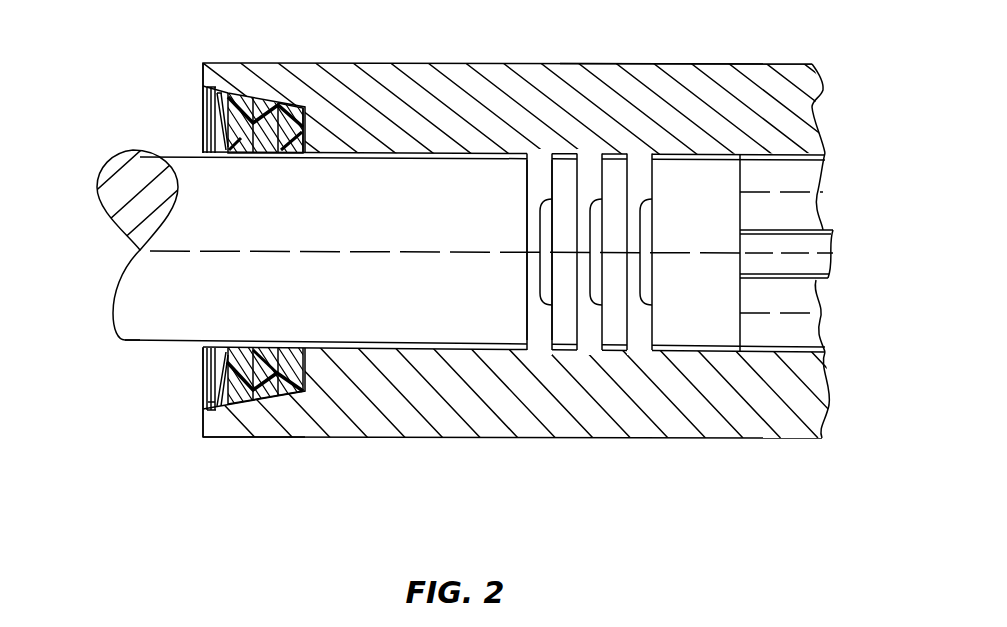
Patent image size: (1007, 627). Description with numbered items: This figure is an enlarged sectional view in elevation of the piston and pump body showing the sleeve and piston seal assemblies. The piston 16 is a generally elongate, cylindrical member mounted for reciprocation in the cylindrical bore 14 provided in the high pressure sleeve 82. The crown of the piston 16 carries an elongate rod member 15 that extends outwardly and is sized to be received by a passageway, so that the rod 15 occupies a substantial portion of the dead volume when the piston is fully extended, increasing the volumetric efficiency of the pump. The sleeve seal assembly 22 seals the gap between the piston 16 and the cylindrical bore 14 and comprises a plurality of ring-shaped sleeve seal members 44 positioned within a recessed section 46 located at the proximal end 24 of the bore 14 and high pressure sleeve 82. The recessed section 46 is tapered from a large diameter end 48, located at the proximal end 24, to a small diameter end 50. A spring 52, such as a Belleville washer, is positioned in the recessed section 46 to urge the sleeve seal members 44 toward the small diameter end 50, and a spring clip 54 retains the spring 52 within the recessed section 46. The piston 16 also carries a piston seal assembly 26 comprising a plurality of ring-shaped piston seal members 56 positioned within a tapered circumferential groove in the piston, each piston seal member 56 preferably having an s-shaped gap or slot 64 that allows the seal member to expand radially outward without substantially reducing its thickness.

The cylindrical bore 14 is at (787, 352).
The elongate rod member 15 is at (786, 278).
The piston 16 is at (108, 275).
The sleeve seal assembly 22 is at (253, 415).
The proximal end 24 is at (203, 418).
The piston seal assembly 26 is at (505, 283).
The ring-shaped sleeve seal members 44 is at (239, 122).
The recessed section 46 is at (274, 100).
The large diameter end 48 is at (203, 78).
The small diameter end 50 is at (305, 112).
The spring 52 is at (205, 125).
The spring clip 54 is at (203, 382).
The ring-shaped piston seal members 56 is at (542, 351).
The s-shaped gap or slot 64 is at (540, 223).
The high pressure sleeve 82 is at (660, 64).